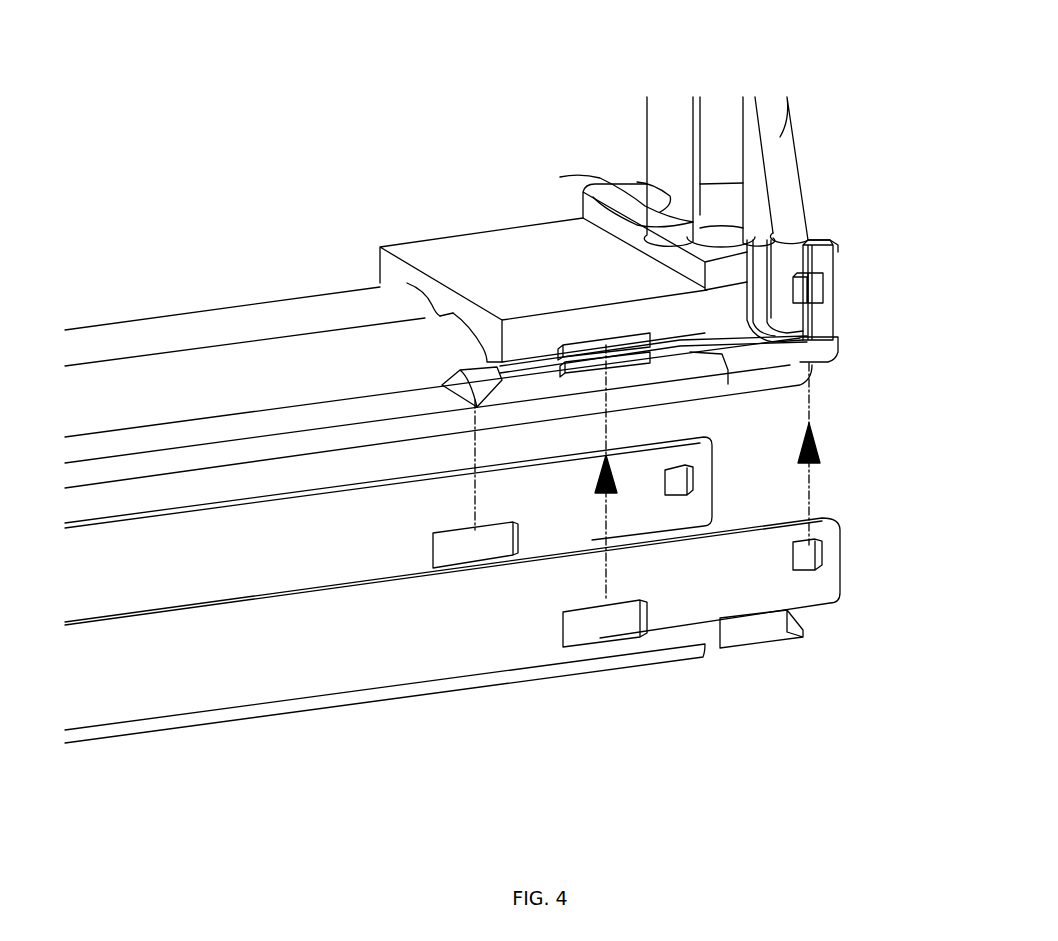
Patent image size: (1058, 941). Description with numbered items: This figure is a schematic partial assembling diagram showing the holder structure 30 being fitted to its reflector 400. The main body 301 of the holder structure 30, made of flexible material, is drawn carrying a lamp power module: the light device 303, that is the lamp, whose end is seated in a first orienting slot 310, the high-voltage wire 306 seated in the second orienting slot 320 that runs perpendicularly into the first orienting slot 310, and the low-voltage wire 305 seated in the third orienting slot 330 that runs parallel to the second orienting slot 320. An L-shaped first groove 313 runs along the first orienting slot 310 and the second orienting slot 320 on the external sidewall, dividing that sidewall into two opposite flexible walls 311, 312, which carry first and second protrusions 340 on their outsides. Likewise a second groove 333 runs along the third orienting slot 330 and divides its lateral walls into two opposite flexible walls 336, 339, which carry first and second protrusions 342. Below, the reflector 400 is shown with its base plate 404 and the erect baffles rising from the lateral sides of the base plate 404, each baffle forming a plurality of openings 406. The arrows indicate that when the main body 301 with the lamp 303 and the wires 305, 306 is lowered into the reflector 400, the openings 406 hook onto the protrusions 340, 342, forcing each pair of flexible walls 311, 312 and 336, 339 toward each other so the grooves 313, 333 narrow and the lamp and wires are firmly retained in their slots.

The holder structure 30 is at (623, 210).
The main body 301 is at (510, 250).
The light device 303 is at (258, 320).
The low-voltage wire 305 is at (780, 137).
The high-voltage wire 306 is at (720, 183).
The first orienting slot 310 is at (470, 330).
The flexible wall 311 is at (497, 345).
The flexible wall 312 is at (455, 372).
The first groove 313 is at (563, 350).
The second orienting slot 320 is at (590, 190).
The third orienting slot 330 is at (830, 250).
The second groove 333 is at (830, 338).
The flexible wall 336 is at (808, 246).
The flexible wall 339 is at (835, 262).
The first and second protrusions 340 is at (615, 346).
The first and second protrusions 342 is at (820, 300).
The reflector 400 is at (504, 621).
The base plate 404 is at (812, 625).
The openings 406 is at (800, 565).